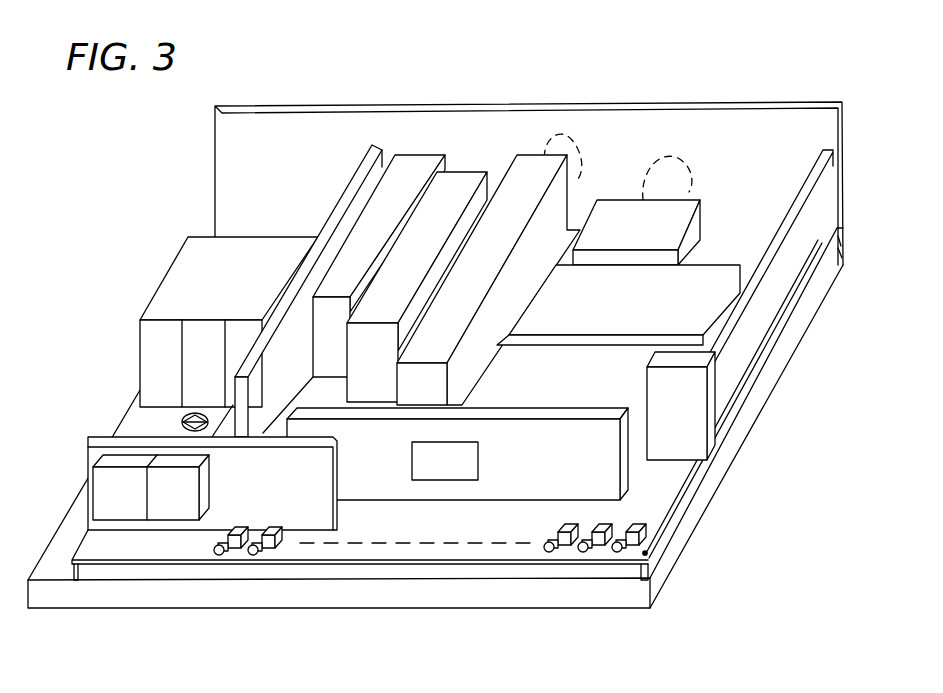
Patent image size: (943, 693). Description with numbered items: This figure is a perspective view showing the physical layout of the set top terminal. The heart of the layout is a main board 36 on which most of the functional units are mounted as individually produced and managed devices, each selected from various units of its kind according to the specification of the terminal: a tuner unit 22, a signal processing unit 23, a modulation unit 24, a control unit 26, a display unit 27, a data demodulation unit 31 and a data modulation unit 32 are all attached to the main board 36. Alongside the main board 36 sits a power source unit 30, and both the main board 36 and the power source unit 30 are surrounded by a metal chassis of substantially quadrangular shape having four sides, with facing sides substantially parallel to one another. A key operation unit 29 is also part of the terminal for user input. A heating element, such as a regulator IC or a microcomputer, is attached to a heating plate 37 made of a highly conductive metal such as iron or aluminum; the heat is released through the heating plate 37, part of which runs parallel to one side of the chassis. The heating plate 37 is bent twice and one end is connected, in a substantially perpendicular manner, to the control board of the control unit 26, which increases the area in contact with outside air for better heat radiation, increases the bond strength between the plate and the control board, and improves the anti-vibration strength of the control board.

The tuner unit 22 is at (526, 185).
The signal processing unit 23 is at (595, 368).
The modulation unit 24 is at (613, 213).
The control unit 26 is at (600, 457).
The display unit 27 is at (312, 520).
The key operation unit 29 is at (620, 552).
The power source unit 30 is at (263, 247).
The data demodulation unit 31 is at (418, 167).
The data modulation unit 32 is at (458, 187).
The main board 36 is at (132, 564).
The heating plate 37 is at (764, 325).